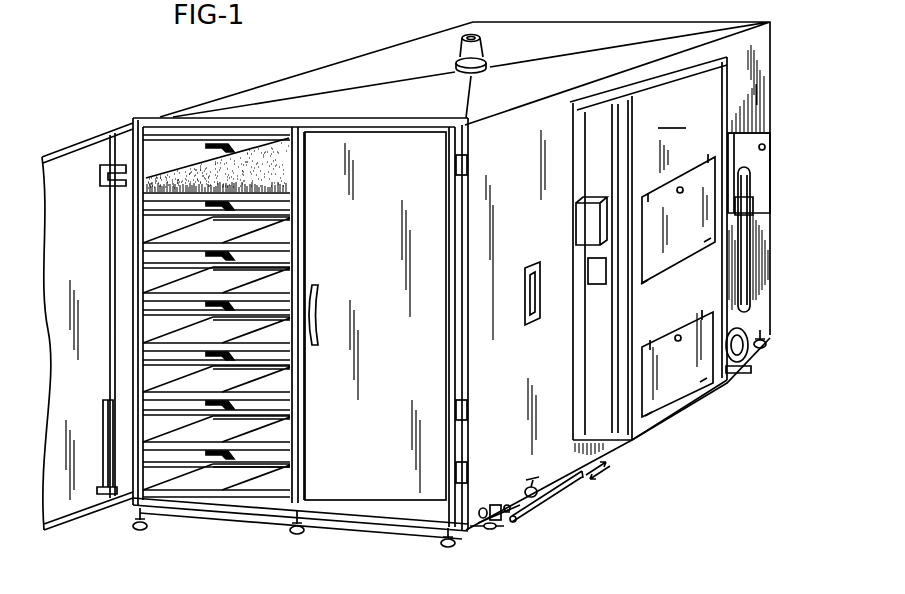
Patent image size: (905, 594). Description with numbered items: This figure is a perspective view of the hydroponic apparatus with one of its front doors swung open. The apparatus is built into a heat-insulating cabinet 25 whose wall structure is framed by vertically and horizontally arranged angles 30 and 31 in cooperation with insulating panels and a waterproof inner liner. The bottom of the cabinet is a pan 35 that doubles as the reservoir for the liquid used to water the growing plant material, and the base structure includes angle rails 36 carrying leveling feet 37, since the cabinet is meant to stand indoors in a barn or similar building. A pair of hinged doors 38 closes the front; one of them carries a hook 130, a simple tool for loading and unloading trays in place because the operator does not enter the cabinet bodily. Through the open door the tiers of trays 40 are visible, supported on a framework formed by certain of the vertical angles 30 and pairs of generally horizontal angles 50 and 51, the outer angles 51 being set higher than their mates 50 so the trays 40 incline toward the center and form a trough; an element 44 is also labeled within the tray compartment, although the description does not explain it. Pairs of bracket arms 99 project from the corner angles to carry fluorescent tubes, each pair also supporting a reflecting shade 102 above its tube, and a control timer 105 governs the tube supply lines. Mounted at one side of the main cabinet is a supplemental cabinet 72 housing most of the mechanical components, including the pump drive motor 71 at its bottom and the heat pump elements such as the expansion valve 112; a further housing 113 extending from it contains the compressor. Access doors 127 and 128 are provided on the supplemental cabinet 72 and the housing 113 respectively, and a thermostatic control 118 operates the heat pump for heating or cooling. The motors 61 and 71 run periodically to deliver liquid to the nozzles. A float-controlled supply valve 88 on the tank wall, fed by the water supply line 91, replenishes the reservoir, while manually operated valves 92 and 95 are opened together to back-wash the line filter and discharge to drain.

The cabinet 25 is at (231, 87).
The vertical angles 30 is at (152, 147).
The horizontal angles 31 is at (191, 128).
The pan 35 is at (372, 526).
The angle rails 36 is at (215, 510).
The leveling feet 37 is at (142, 531).
The hinged doors 38 is at (75, 165).
The trays 40 is at (286, 197).
The guide rail 44 is at (288, 232).
The horizontal angles 50 is at (293, 252).
The horizontal angles 51 is at (137, 343).
The motor 61 is at (467, 36).
The drive motor 71 is at (741, 356).
The supplemental cabinet 72 is at (648, 256).
The supply valve 88 is at (491, 529).
The water supply line 91 is at (572, 483).
The manually operated valve 92 is at (506, 501).
The manually operated valve 95 is at (539, 495).
The bracket arms 99 is at (160, 305).
The reflecting shade 102 is at (292, 432).
The control timer 105 is at (578, 229).
The expansion valve 112 is at (749, 283).
The housing 113 is at (752, 136).
The thermostatic control 118 is at (590, 280).
The access door 127 is at (665, 345).
The access door 128 is at (764, 163).
The hook 130 is at (108, 472).